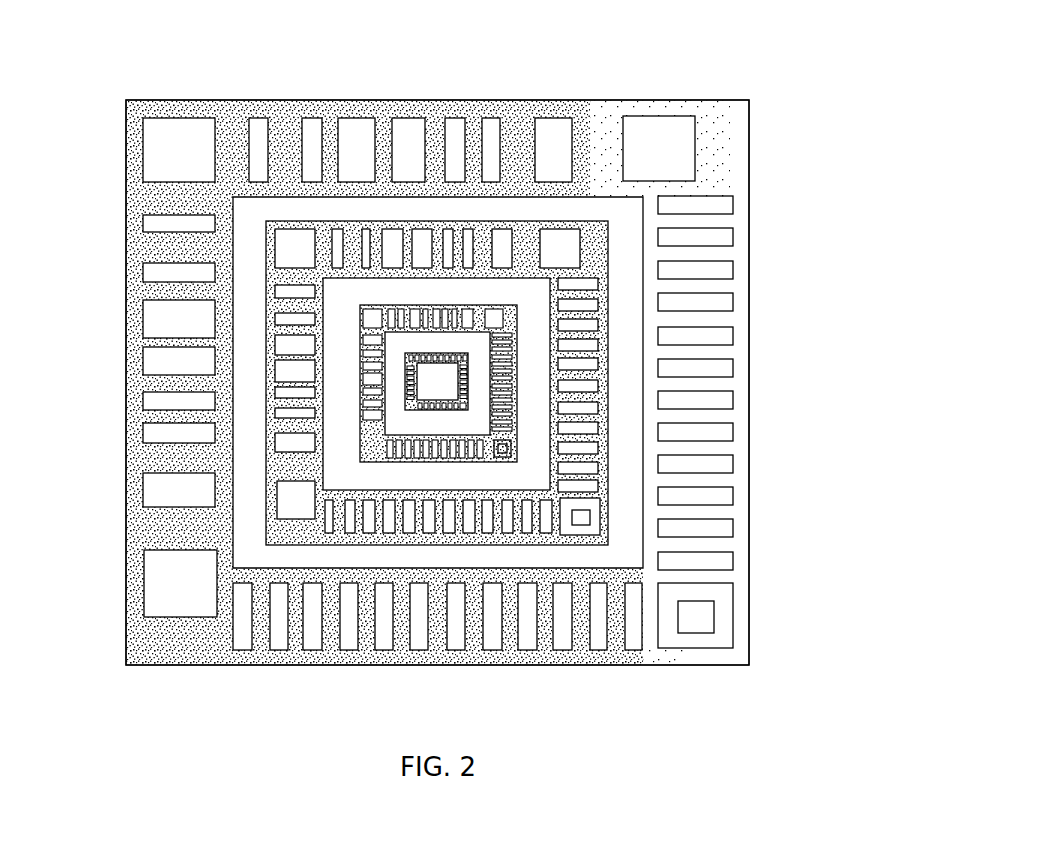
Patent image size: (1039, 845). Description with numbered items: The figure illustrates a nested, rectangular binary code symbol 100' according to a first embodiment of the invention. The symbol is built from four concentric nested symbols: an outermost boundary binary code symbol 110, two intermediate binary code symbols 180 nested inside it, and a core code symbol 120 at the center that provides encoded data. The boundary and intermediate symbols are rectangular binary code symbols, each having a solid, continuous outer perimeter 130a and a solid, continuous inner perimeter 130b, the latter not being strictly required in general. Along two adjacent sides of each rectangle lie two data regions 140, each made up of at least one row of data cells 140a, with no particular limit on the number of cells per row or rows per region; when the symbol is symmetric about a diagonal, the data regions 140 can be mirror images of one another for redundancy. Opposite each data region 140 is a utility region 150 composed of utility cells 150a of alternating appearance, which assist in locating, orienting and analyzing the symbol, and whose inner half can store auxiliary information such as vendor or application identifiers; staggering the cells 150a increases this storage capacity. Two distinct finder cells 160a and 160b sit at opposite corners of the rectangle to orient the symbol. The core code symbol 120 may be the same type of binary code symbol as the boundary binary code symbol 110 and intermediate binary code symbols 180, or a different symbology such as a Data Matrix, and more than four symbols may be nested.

The nested rectangular binary code symbol 100' is at (437, 333).
The boundary binary code symbol 110 is at (692, 98).
The core code symbol 120 is at (417, 353).
The outer perimeter 130a is at (132, 560).
The inner perimeter 130b is at (492, 187).
The data region 140 is at (648, 100).
The data cell 140a is at (553, 135).
The utility region 150 is at (755, 375).
The utility cell 150a is at (717, 413).
The first finder cell 160a is at (162, 137).
The second finder cell 160b is at (688, 640).
The intermediate binary code symbol 180 is at (367, 548).